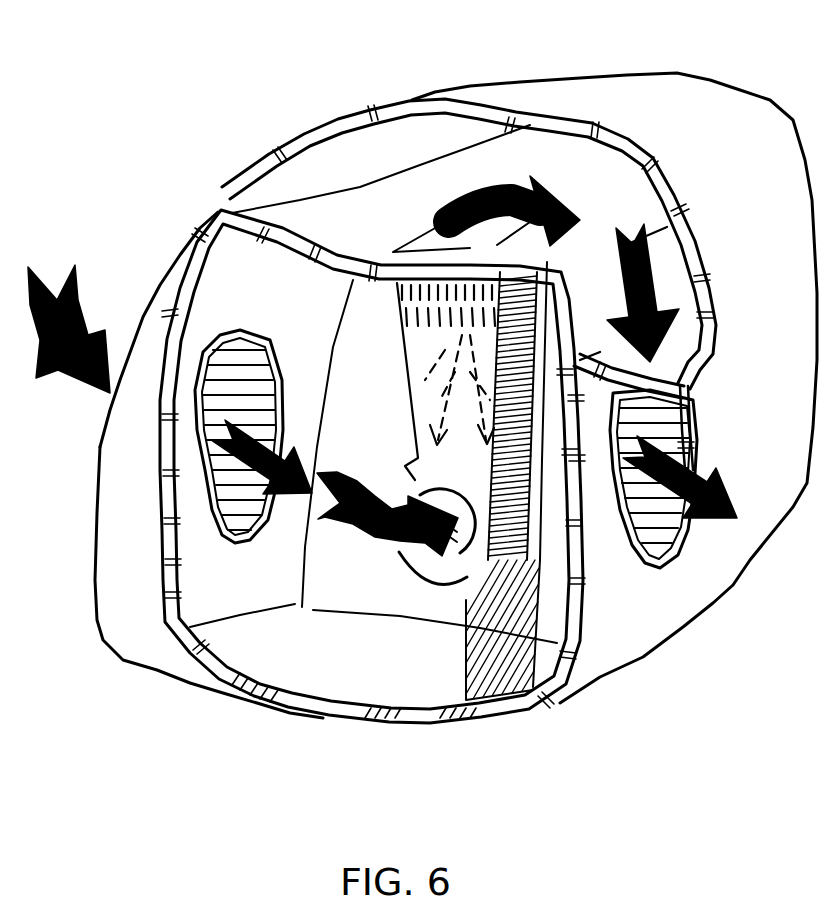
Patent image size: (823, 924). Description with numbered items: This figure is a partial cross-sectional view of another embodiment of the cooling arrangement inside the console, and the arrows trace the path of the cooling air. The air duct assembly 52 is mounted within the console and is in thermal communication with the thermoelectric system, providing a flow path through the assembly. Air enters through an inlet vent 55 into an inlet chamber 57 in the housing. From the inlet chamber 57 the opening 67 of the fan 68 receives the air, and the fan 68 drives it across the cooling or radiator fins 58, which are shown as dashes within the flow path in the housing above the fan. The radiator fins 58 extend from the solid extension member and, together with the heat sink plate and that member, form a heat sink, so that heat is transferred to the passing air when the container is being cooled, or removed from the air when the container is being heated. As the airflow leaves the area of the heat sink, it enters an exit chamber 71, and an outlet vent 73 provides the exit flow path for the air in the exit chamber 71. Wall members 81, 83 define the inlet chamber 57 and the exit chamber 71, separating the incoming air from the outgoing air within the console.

The air duct assembly 52 is at (376, 580).
The inlet vent 55 is at (220, 360).
The inlet chamber 57 is at (264, 662).
The radiator fins 58 is at (402, 302).
The opening of fan 67 is at (477, 540).
The fan 68 is at (418, 458).
The exit chamber 71 is at (347, 207).
The outlet vent 73 is at (693, 413).
The wall member 81 is at (283, 252).
The wall member 83 is at (480, 657).